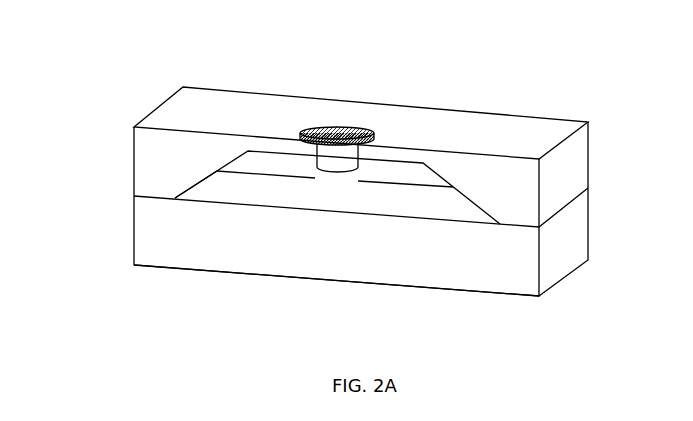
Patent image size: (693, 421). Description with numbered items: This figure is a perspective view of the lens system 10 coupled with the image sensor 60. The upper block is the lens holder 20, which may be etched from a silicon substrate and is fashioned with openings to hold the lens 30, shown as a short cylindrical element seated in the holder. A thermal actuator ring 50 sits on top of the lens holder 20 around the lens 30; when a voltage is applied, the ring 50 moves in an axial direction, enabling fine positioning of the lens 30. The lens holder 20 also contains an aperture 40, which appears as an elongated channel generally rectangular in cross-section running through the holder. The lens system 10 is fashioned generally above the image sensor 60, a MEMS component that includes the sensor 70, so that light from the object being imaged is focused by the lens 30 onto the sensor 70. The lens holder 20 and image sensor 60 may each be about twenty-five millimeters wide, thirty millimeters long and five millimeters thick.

The lens system 10 is at (537, 137).
The lens holder 20 is at (488, 138).
The lens 30 is at (340, 172).
The aperture 40 is at (205, 180).
The thermal actuator ring 50 is at (366, 126).
The image sensor 60 is at (488, 268).
The sensor 70 is at (233, 194).